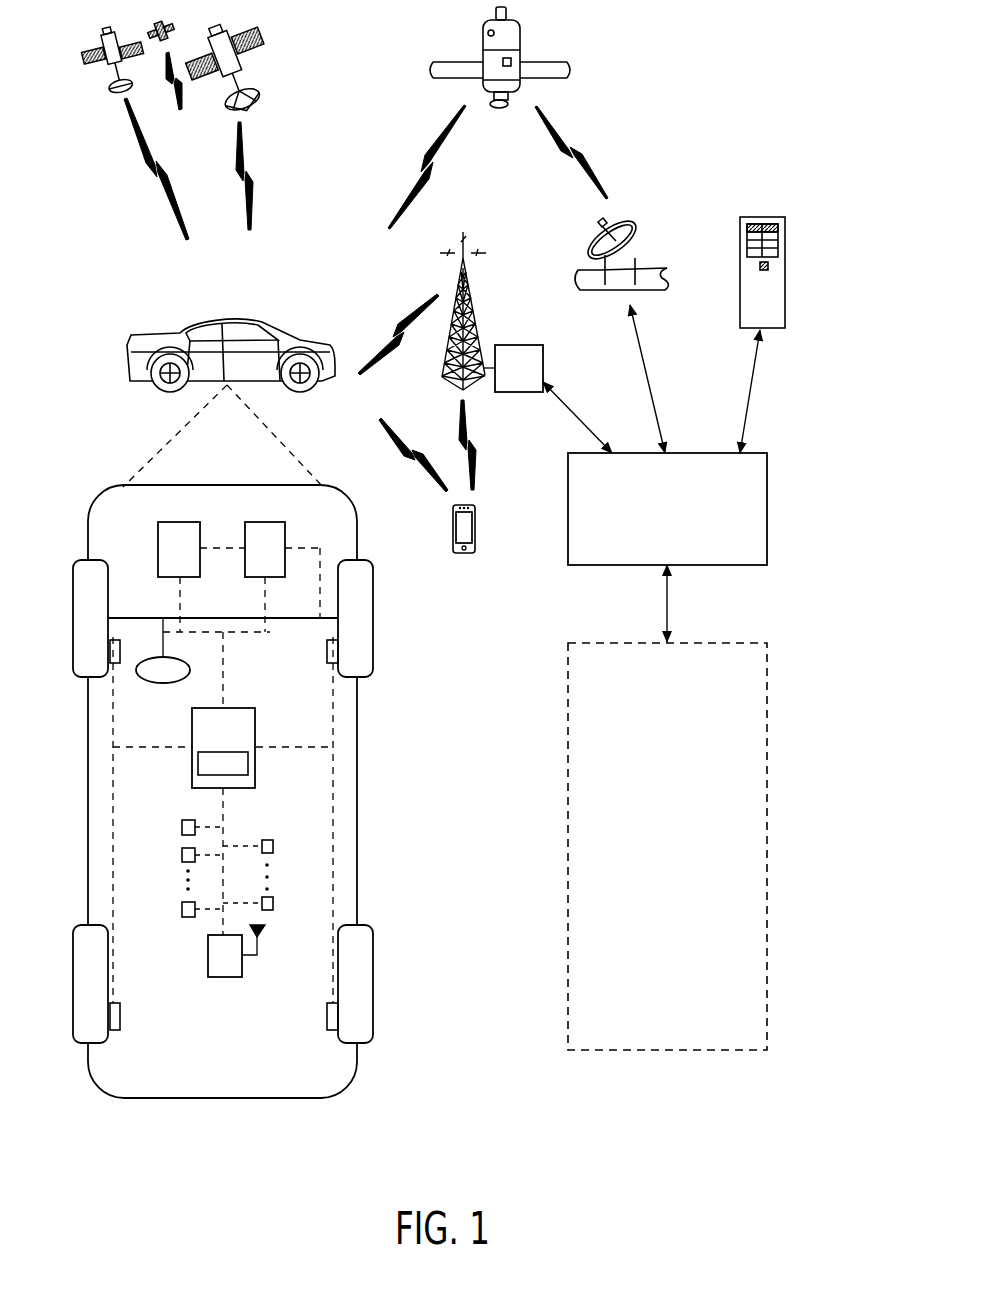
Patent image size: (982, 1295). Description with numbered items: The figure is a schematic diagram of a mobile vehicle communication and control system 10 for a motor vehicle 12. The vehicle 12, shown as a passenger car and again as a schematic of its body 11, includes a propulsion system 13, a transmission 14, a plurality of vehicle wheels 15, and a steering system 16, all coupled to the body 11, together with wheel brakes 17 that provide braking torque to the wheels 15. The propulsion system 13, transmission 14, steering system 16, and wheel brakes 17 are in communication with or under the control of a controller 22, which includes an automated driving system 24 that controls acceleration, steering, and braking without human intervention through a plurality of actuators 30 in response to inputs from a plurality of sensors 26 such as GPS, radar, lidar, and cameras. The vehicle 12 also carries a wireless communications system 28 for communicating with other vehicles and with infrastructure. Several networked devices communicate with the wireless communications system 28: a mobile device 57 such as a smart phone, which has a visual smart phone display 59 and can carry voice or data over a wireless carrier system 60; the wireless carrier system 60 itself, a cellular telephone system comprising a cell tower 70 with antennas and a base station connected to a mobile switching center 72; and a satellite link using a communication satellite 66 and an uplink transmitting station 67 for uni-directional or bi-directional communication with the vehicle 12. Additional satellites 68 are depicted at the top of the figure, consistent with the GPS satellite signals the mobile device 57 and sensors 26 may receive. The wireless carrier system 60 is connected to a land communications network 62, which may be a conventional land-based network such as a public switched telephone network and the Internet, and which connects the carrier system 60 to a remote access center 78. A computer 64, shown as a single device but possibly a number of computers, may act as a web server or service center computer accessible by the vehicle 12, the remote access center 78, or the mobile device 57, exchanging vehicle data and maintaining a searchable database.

The mobile vehicle communication and control system 10 is at (718, 90).
The body 11 is at (87, 887).
The motor vehicle 12 is at (130, 358).
The propulsion system 13 is at (158, 550).
The transmission 14 is at (285, 540).
The vehicle wheels 15 is at (108, 607).
The steering system 16 is at (165, 683).
The wheel brakes 17 is at (115, 663).
The controller 22 is at (255, 730).
The automated driving system 24 is at (233, 790).
The sensors 26 is at (182, 826).
The wireless communications system 28 is at (222, 978).
The actuators 30 is at (273, 846).
The mobile device 57 is at (476, 548).
The visual smart phone display 59 is at (470, 529).
The wireless carrier system 60 is at (483, 395).
The land communications network 62 is at (767, 515).
The computer 64 is at (785, 288).
The communication satellite 66 is at (522, 46).
The uplink transmitting station 67 is at (648, 267).
The GPS satellites 68 is at (276, 108).
The cell tower 70 is at (470, 295).
The mobile switching center 72 is at (531, 352).
The remote access center 78 is at (665, 1050).